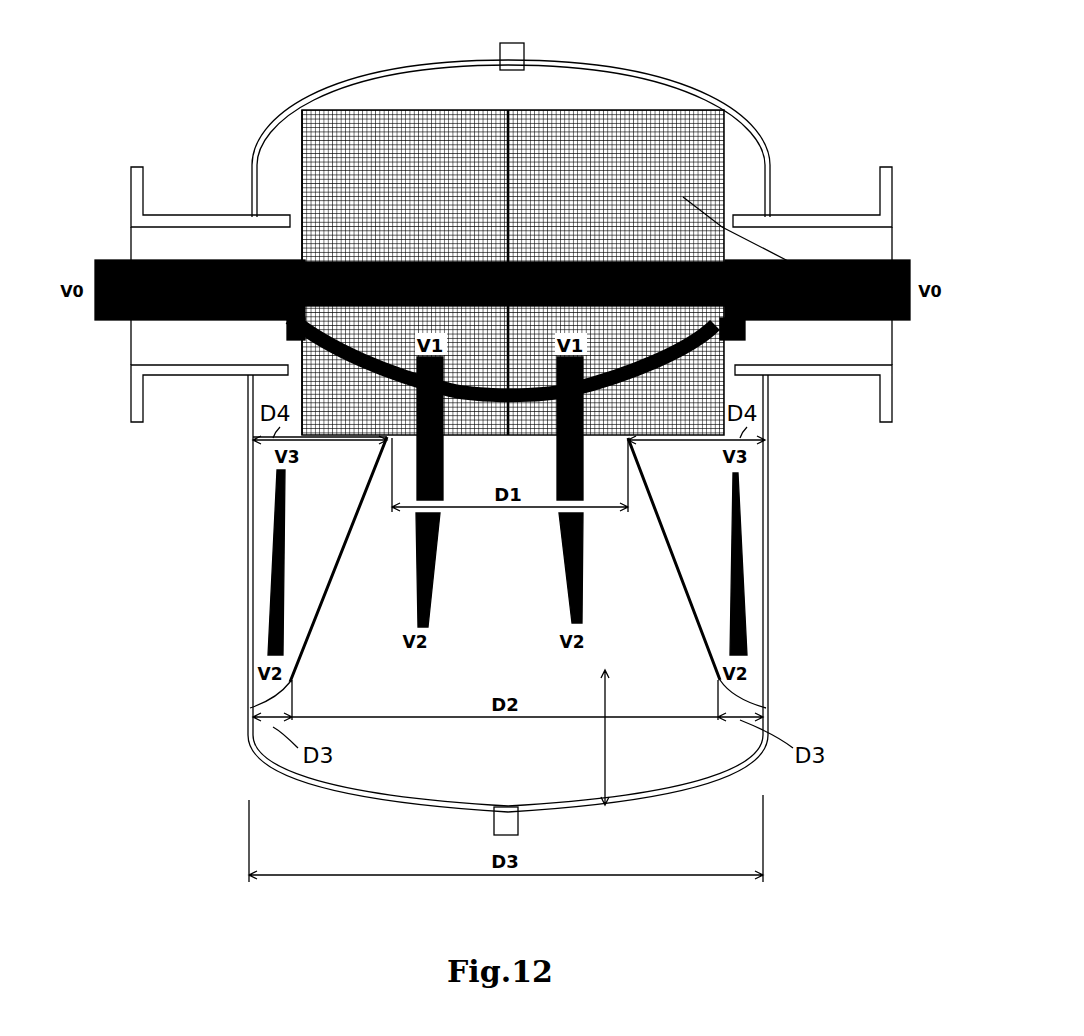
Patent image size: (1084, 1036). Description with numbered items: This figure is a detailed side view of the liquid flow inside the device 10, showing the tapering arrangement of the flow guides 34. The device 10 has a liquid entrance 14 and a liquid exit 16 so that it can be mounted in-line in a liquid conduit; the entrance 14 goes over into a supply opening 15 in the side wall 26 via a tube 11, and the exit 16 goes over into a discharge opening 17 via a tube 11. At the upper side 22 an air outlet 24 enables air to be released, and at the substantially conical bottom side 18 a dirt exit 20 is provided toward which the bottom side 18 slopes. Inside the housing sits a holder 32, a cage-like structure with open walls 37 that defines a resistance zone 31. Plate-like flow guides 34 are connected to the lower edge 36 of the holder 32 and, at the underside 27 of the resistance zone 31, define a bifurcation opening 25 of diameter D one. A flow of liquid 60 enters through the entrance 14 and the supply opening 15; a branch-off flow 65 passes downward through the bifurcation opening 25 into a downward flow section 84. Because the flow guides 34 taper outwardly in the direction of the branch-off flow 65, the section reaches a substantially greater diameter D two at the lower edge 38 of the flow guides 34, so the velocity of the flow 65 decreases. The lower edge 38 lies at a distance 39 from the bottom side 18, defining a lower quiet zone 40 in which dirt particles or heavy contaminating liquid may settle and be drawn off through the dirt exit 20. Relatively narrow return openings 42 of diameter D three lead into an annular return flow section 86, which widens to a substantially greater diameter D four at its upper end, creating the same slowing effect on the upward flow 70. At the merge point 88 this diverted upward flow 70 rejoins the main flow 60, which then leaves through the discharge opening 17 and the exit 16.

The device 10 is at (170, 492).
The tube 11 is at (167, 215).
The liquid entrance 14 is at (128, 364).
The supply opening 15 is at (267, 260).
The liquid exit 16 is at (893, 208).
The discharge opening 17 is at (778, 240).
The bottom side 18 is at (330, 800).
The dirt exit 20 is at (493, 830).
The upper side 22 is at (307, 90).
The air outlet 24 is at (524, 52).
The bifurcation opening 25 is at (463, 438).
The side wall 26 is at (248, 420).
The underside of the resistance zone 27 is at (536, 438).
The resistance zone 31 is at (867, 320).
The holder 32 is at (300, 143).
The flow guides 34 is at (330, 577).
The lower edge of the holder 36 is at (357, 437).
The open walls 37 is at (683, 153).
The lower edge of the flow guides 38 is at (293, 682).
The distance 39 is at (610, 703).
The lower quiet zone 40 is at (414, 773).
The return openings 42 is at (260, 687).
The flow of liquid 60 is at (112, 260).
The branch-off flow 65 is at (430, 542).
The upward flow 70 is at (278, 540).
The downward flow section 84 is at (492, 601).
The return flow section 86 is at (311, 521).
The merge point 88 is at (300, 388).